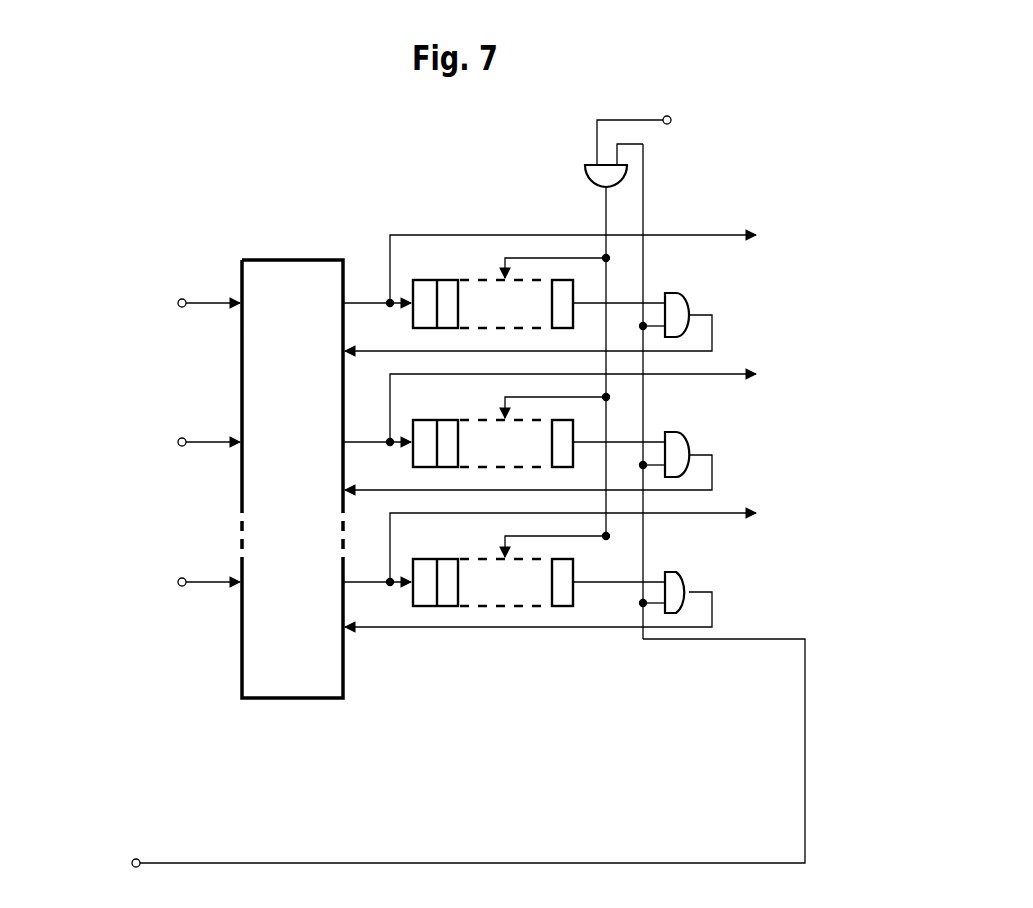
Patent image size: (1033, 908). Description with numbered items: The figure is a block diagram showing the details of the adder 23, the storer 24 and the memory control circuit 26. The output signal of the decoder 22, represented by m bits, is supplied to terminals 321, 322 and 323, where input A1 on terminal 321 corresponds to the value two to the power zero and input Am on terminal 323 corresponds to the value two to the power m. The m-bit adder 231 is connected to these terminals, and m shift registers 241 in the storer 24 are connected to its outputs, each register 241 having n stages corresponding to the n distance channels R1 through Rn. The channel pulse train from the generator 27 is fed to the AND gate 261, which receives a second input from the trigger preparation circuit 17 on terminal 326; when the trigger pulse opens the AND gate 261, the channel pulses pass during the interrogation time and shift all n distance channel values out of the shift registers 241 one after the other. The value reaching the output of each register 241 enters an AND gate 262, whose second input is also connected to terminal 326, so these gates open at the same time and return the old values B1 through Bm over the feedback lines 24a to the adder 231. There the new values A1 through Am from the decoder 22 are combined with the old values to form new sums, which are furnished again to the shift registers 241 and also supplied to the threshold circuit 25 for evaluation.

The adder 23 is at (264, 489).
The m-bit adder 231 is at (281, 264).
The decoder 22 is at (146, 445).
The terminal 321 is at (178, 300).
The terminal 322 is at (186, 438).
The terminal 323 is at (171, 585).
The trigger preparation circuit 17 is at (425, 770).
The terminal 326 is at (130, 862).
The channel pulse train generator 27 is at (666, 363).
The AND gate 261 is at (584, 167).
The storer 24 is at (597, 472).
The shift register 241 is at (484, 278).
The threshold circuit 25 is at (772, 513).
The memory control circuit 26 is at (553, 489).
The AND gate 262 is at (677, 298).
The feedback line 24a is at (553, 471).